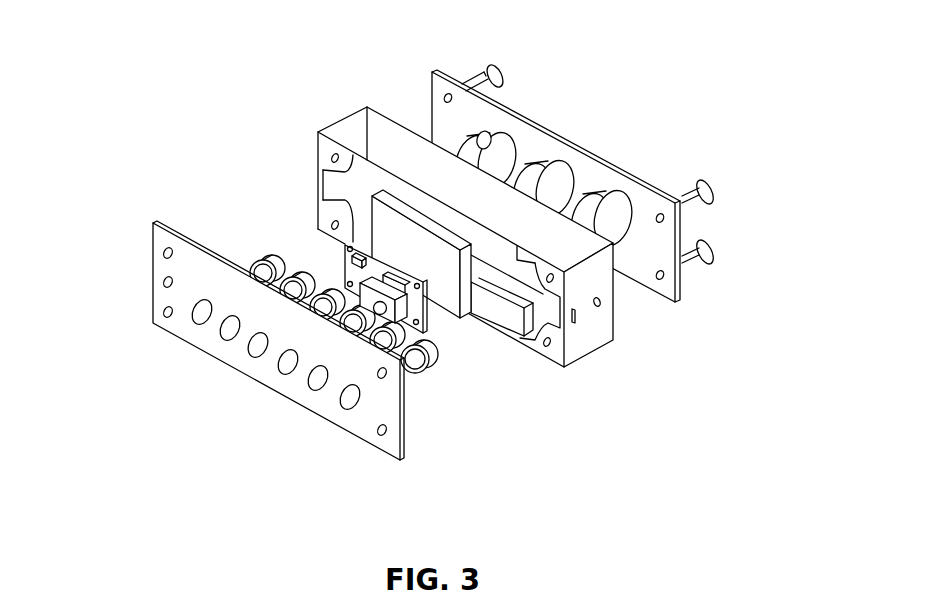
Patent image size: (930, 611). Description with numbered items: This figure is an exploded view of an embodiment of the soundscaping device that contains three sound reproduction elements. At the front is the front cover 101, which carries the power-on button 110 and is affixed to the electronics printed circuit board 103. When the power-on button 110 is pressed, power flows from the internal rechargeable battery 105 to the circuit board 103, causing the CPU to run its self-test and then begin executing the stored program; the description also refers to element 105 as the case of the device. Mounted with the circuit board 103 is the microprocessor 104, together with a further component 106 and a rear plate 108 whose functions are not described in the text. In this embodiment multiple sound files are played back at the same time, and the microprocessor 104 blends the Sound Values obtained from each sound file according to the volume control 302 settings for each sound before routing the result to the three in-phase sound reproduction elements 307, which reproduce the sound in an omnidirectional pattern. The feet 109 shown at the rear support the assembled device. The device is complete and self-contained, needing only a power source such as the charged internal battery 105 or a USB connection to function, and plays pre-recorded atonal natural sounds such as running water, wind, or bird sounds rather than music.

The front cover 101 is at (152, 272).
The volume control 302 is at (343, 263).
The electronics printed circuit board 103 is at (258, 258).
The power-on button 110 is at (380, 278).
The microprocessor 104 is at (423, 325).
The guide block 106 is at (461, 322).
The internal rechargeable battery 105 is at (596, 352).
The in-phase sound reproduction elements 307 is at (586, 205).
The mounting plate 108 is at (606, 161).
The feet 109 is at (714, 190).